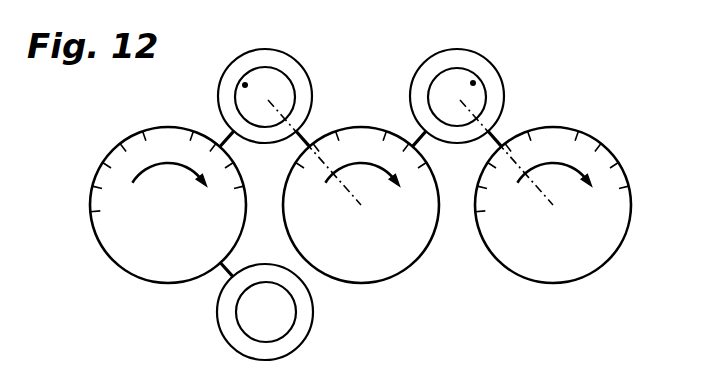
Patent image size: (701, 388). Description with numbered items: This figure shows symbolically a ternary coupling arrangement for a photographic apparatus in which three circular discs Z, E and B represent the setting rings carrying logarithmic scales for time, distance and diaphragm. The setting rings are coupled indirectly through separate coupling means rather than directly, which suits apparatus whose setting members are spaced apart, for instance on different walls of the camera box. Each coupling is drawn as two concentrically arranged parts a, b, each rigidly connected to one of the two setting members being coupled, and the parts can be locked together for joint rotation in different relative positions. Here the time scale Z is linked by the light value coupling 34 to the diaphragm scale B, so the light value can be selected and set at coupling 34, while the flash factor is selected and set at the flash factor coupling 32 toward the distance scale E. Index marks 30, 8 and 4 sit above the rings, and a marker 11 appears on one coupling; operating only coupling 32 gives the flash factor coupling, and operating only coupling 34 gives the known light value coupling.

The feed roller Z index 30 is at (158, 112).
The roller B index 8 is at (350, 112).
The roller E index 4 is at (542, 112).
The light value coupling 34 is at (265, 136).
The flash factor coupling 32 is at (457, 136).
The marker pin 11 is at (236, 81).
The concentrically arranged coupling part a is at (277, 55).
The concentrically arranged coupling part b is at (255, 70).